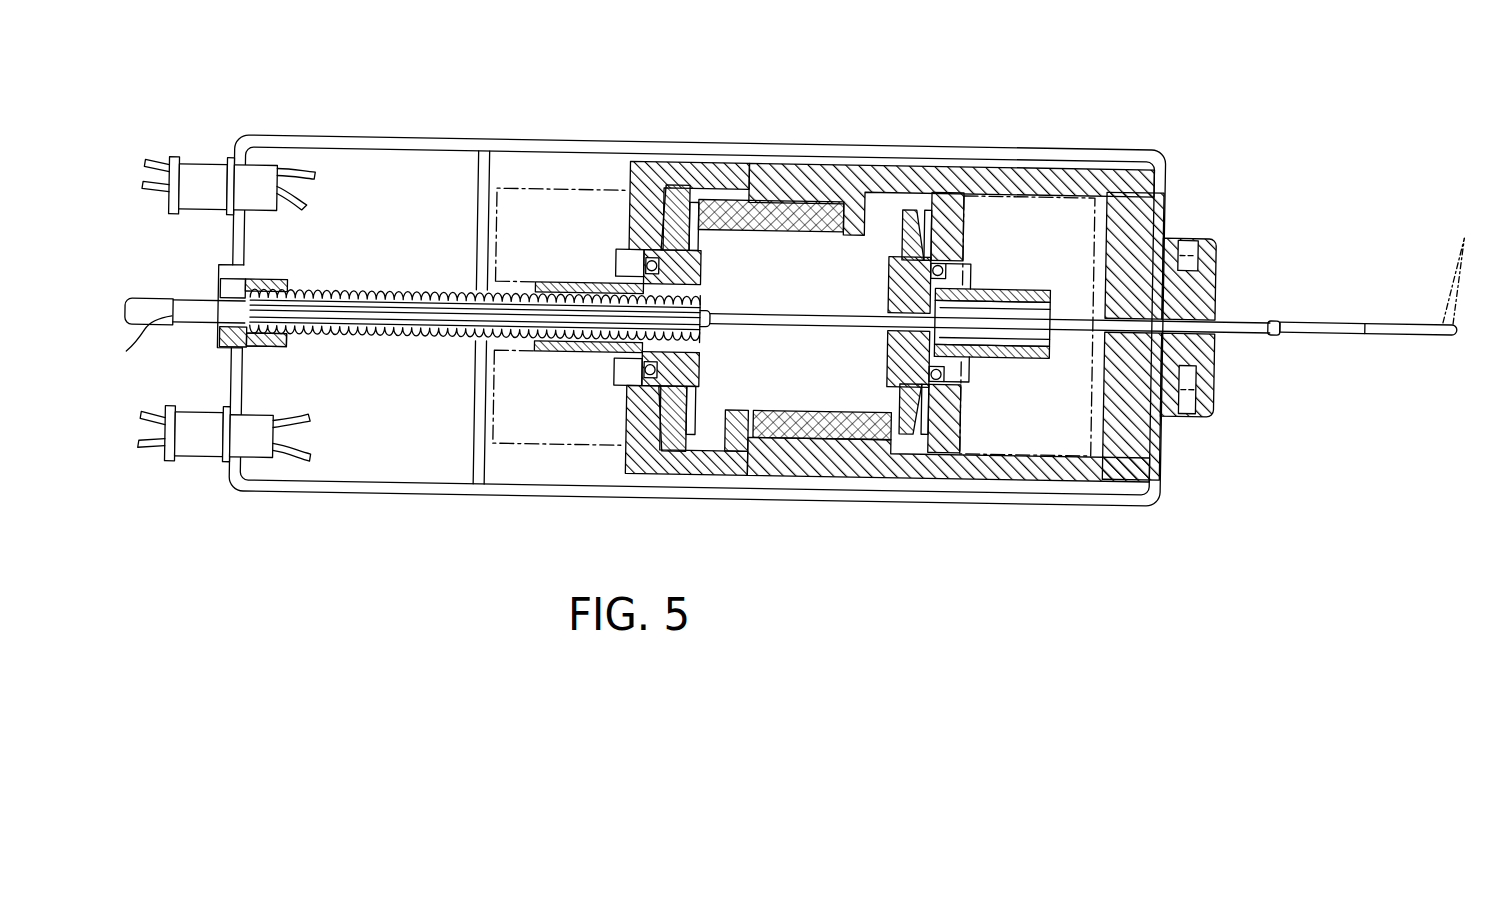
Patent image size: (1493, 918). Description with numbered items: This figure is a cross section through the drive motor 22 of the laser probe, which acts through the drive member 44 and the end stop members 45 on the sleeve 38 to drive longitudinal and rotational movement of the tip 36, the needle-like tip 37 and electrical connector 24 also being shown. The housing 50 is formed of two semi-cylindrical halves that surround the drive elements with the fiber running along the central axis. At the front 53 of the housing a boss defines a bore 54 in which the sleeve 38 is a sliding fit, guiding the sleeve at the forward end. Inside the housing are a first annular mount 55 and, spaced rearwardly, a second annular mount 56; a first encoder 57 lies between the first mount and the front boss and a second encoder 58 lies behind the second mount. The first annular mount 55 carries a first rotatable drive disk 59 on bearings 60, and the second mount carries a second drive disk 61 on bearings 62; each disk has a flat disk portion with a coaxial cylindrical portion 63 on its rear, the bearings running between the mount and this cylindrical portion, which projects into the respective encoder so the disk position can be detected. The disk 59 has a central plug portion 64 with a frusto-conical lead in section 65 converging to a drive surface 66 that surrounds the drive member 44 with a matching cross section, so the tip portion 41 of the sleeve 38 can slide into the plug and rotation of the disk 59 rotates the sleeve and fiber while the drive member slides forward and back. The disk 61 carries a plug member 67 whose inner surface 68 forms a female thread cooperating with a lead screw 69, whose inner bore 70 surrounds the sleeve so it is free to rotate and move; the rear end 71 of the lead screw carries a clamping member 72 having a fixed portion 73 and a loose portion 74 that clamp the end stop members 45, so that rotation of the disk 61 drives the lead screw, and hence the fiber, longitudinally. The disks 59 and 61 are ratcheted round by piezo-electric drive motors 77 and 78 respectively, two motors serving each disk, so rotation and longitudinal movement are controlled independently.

The drive motor 22 is at (797, 119).
The electrical connector 24 is at (209, 457).
The tip 36 is at (1438, 316).
The needle 37 is at (1447, 232).
The sleeve 38 is at (1253, 317).
The tip portion 41 is at (1447, 316).
The drive member 44 is at (824, 307).
The end stop member 45 is at (251, 280).
The housing 50 is at (493, 134).
The front 53 is at (1166, 245).
The bore 54 is at (1196, 297).
The first annular mount 55 is at (958, 196).
The second annular mount 56 is at (627, 189).
The first encoder 57 is at (1030, 186).
The second encoder 58 is at (538, 202).
The first rotatable drive disk 59 is at (890, 198).
The bearings 60 is at (950, 259).
The second drive disk 61 is at (694, 238).
The bearings 62 is at (616, 252).
The cylindrical portion 63 is at (538, 346).
The central plug portion 64 is at (888, 282).
The lead in section 65 is at (889, 350).
The drive surface 66 is at (952, 278).
The plug member 67 is at (701, 356).
The inner surface 68 is at (628, 394).
The lead screw 69 is at (413, 336).
The inner bore 70 is at (366, 298).
The rear end 71 is at (304, 337).
The clamping member 72 is at (221, 338).
The first fixed portion 73 is at (264, 348).
The second loose portion 74 is at (209, 331).
The drive motor 77 is at (804, 430).
The drive motor 78 is at (728, 193).